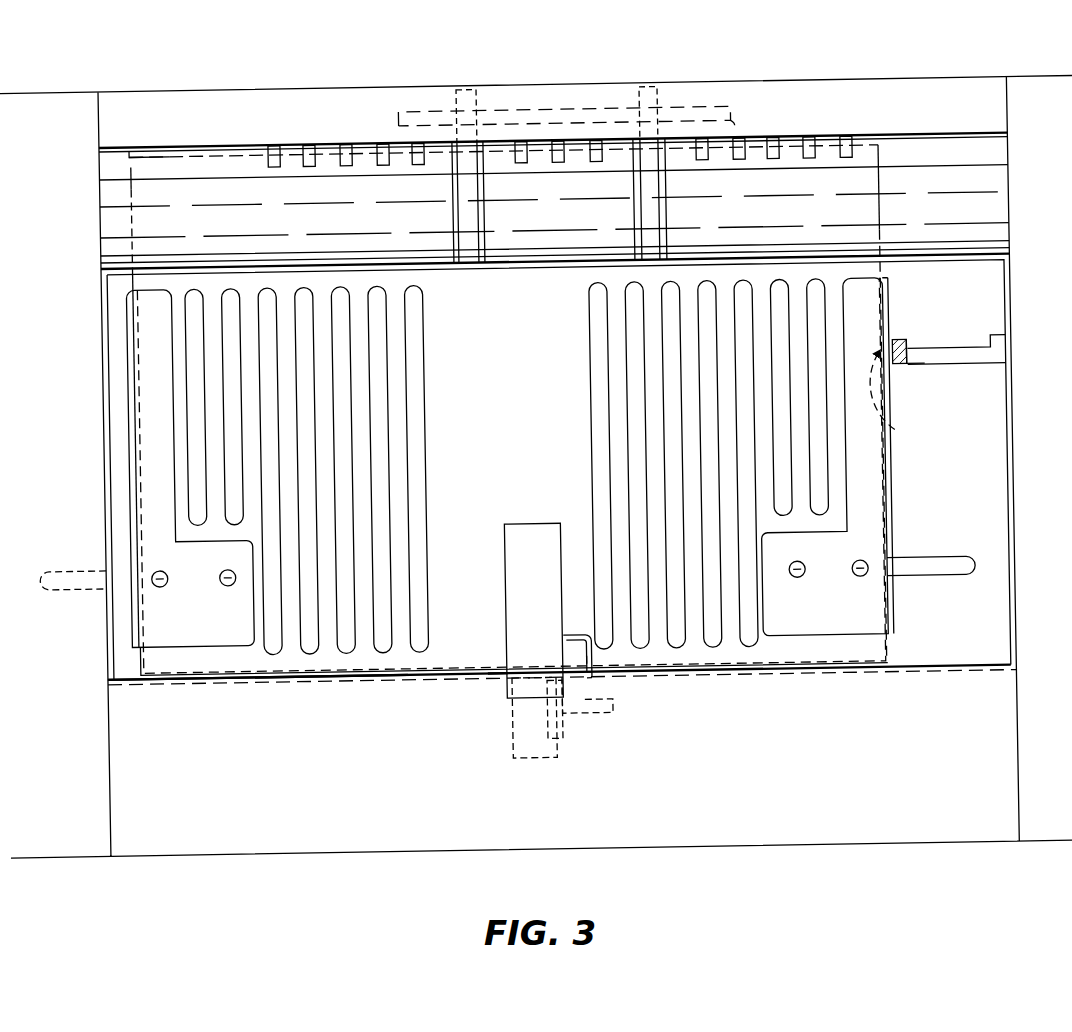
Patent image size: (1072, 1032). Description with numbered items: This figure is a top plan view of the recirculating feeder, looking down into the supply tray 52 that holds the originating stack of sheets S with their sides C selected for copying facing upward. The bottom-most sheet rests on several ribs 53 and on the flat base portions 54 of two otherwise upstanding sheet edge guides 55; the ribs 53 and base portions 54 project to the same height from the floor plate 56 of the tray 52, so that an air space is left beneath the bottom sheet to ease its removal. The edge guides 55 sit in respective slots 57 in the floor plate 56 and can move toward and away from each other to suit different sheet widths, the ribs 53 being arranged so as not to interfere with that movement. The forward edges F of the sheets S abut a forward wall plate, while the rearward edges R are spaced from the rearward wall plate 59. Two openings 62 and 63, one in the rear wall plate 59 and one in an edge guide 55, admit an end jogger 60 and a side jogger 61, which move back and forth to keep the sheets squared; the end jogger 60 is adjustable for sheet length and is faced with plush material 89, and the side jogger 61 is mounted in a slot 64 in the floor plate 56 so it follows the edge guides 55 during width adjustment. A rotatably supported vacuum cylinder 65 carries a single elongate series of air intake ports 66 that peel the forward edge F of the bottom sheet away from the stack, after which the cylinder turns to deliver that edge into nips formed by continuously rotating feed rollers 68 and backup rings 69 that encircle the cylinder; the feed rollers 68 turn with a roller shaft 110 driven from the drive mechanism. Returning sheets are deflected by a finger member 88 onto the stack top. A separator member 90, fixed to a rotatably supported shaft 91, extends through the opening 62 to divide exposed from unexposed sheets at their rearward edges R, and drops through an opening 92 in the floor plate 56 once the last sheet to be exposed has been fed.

The supply tray 52 is at (755, 416).
The ribs 53 is at (642, 566).
The flat base portions 54 is at (507, 463).
The sheet edge guides 55 is at (509, 454).
The floor plate 56 is at (512, 531).
The slots 57 is at (507, 538).
The rearward wall plate 59 is at (225, 594).
The end jogger 60 is at (499, 718).
The side jogger 61 is at (917, 373).
The opening 62 is at (447, 699).
The opening 63 is at (906, 398).
The slot 64 is at (982, 366).
The vacuum cylinder 65 is at (818, 82).
The air intake ports 66 is at (286, 76).
The feed rollers 68 is at (556, 90).
The backup rings 69 is at (540, 127).
The finger member 88 is at (534, 588).
The plush material 89 is at (502, 719).
The separator member 90 is at (523, 647).
The shaft 91 is at (600, 726).
The opening 92 is at (648, 686).
The roller shaft 110 is at (582, 26).
The forward edges F is at (552, 122).
The sides selected for copying C is at (109, 221).
The sheets S is at (470, 193).
The rearward edges R is at (258, 698).